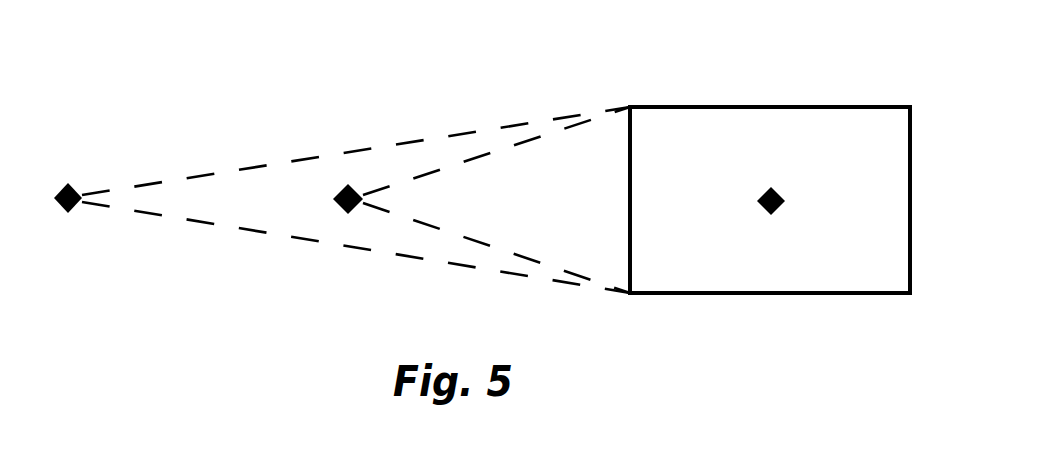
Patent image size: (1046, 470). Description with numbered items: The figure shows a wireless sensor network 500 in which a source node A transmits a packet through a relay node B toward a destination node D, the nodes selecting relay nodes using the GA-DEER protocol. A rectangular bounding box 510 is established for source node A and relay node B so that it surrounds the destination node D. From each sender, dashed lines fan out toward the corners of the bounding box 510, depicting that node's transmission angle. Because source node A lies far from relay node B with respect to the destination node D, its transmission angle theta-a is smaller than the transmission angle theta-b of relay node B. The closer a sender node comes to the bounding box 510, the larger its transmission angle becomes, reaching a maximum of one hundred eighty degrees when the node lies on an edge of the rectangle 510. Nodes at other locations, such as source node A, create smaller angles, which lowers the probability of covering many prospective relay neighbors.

The wireless sensor network 500 is at (438, 152).
The bounding box 510 is at (770, 179).
The source node A is at (71, 190).
The relay node B is at (351, 191).
The destination node D is at (774, 191).